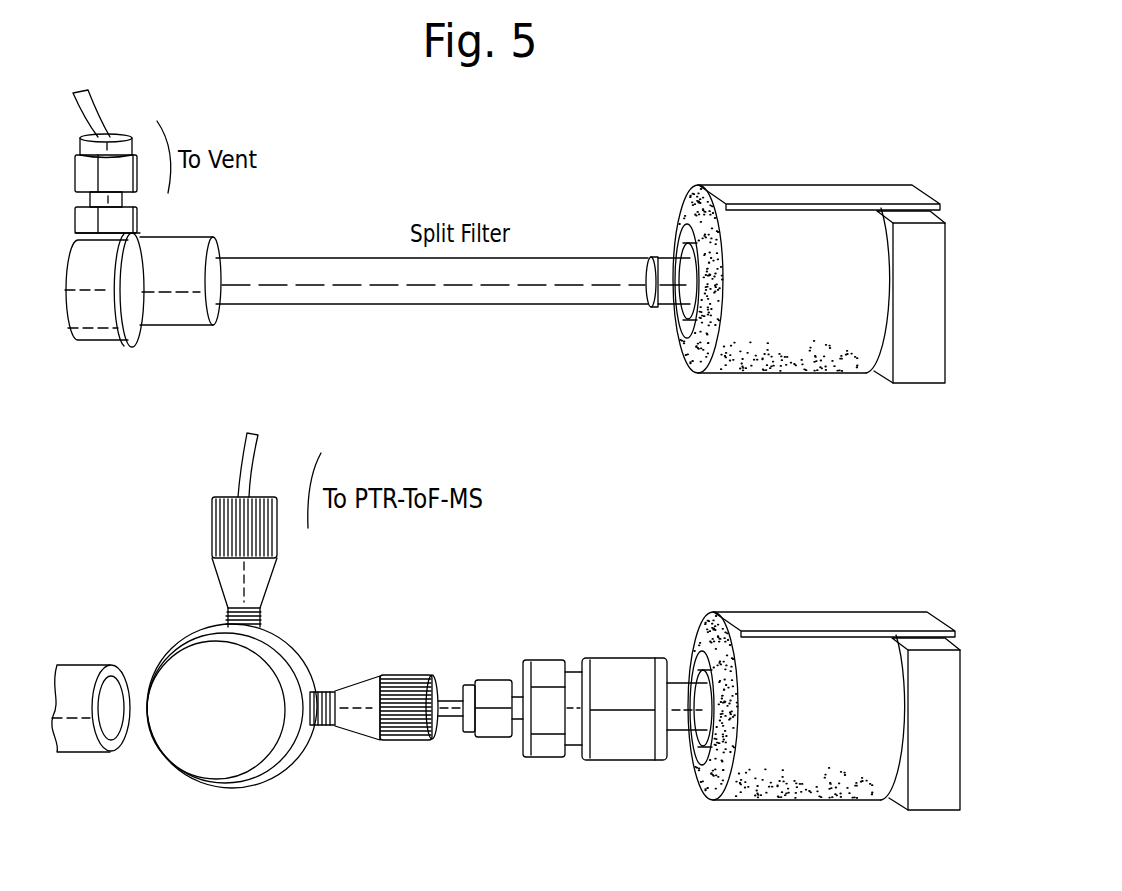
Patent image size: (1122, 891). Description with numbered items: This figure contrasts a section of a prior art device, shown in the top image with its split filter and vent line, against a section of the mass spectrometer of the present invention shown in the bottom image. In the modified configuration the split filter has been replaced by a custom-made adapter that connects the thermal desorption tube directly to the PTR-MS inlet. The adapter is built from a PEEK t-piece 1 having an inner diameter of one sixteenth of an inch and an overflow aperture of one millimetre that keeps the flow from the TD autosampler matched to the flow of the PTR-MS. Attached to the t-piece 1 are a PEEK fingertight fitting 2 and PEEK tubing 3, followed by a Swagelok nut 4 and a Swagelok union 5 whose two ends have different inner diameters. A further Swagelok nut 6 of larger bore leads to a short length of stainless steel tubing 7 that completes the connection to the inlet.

The t-piece 1 is at (193, 753).
The fingertight fitting 2 is at (400, 687).
The tubing 3 is at (453, 706).
The nut 4 is at (493, 690).
The union 5 is at (548, 720).
The further nut 6 is at (617, 670).
The stainless steel tubing 7 is at (683, 717).